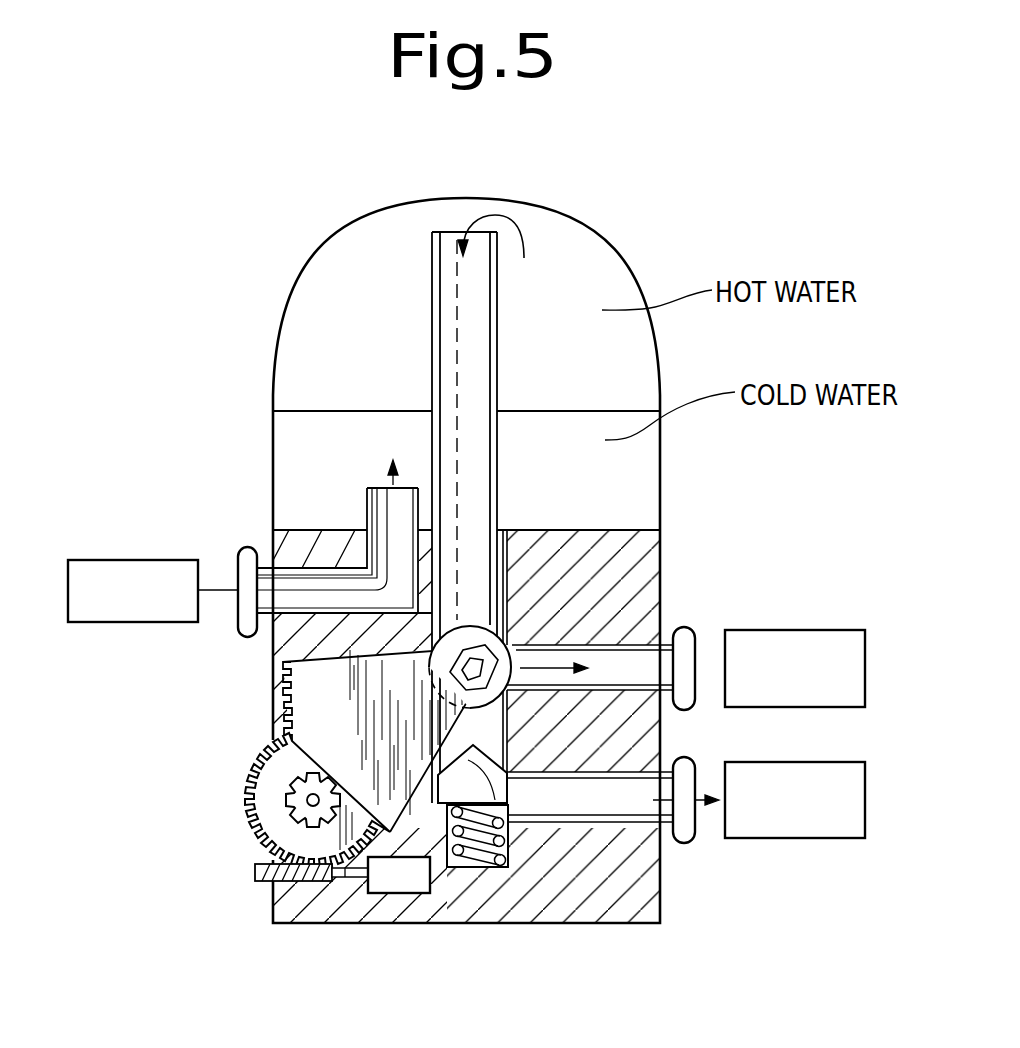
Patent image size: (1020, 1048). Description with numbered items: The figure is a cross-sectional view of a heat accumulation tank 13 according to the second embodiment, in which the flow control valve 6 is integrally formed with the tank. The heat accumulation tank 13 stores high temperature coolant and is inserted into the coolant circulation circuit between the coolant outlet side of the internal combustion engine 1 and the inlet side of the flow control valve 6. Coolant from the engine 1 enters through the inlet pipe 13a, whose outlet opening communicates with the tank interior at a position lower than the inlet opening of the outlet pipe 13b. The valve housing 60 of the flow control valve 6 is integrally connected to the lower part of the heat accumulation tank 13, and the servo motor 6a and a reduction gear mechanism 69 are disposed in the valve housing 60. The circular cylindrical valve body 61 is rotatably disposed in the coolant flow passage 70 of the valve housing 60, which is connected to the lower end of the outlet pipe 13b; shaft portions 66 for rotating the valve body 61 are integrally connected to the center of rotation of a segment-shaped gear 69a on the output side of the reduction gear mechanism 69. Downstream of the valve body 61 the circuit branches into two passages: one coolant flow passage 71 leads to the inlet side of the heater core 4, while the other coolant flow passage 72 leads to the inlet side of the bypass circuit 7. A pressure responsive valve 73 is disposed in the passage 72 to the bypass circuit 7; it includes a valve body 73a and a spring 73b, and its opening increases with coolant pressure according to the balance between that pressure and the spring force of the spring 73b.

The internal combustion engine 1 is at (117, 623).
The heater core 4 is at (840, 630).
The flow control valve 6 is at (672, 585).
The servo motor 6a is at (394, 895).
The bypass circuit 7 is at (832, 840).
The heat accumulation tank 13 is at (620, 282).
The inlet pipe 13a is at (367, 508).
The outlet pipe 13b is at (600, 365).
The valve housing 60 is at (630, 573).
The circular cylindrical valve body 61 is at (577, 530).
The shaft portions 66 is at (655, 612).
The reduction gear mechanism 69 is at (233, 816).
The segment-shaped gear 69a is at (347, 725).
The coolant flow passage 70 is at (477, 567).
The coolant flow passage 71 is at (608, 690).
The coolant flow passage 72 is at (613, 810).
The pressure responsive valve 73 is at (513, 822).
The valve body 73a is at (513, 822).
The spring 73b is at (482, 853).